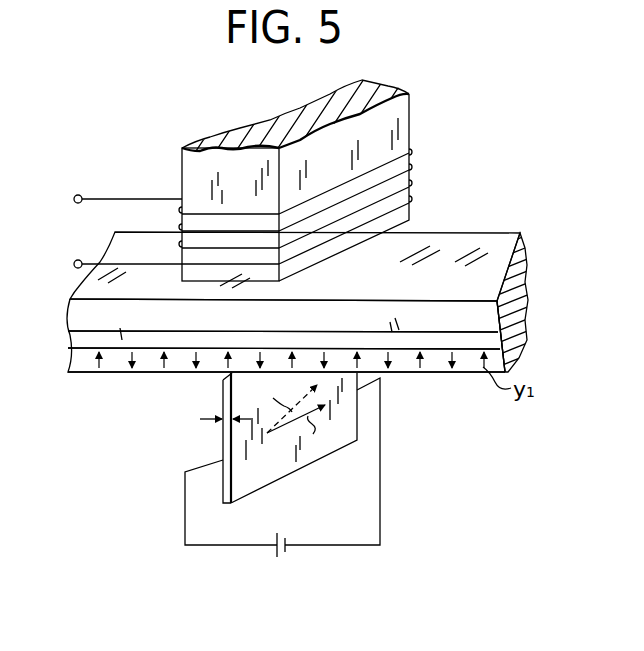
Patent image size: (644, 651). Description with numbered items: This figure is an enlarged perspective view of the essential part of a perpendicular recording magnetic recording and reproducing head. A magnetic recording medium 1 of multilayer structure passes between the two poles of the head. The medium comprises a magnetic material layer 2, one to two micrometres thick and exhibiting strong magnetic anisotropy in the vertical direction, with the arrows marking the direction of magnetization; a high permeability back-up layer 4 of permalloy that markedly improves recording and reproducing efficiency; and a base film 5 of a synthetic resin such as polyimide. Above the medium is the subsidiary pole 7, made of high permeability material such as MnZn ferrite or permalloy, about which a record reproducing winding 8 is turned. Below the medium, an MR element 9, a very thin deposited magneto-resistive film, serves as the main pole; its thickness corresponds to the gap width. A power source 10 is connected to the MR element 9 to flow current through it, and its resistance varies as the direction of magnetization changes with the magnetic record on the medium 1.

The magnetic recording medium 1 is at (58, 297).
The magnetic material layer 2 is at (468, 360).
The back-up layer 4 is at (495, 342).
The base film 5 is at (515, 253).
The subsidiary pole 7 is at (397, 128).
The record reproducing winding 8 is at (125, 198).
The MR element 9 is at (234, 388).
The power source 10 is at (279, 558).